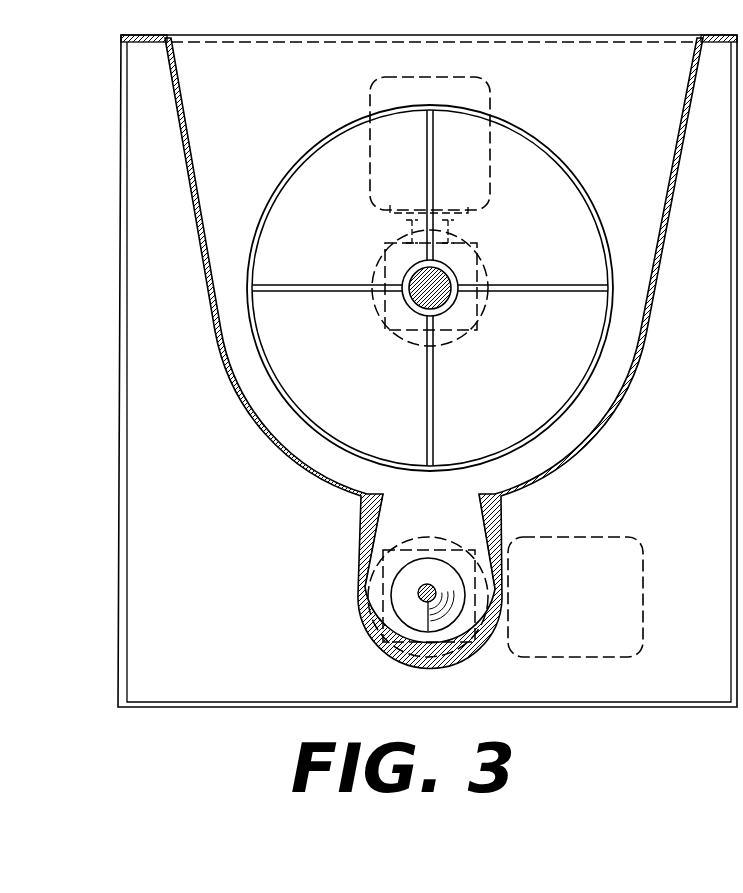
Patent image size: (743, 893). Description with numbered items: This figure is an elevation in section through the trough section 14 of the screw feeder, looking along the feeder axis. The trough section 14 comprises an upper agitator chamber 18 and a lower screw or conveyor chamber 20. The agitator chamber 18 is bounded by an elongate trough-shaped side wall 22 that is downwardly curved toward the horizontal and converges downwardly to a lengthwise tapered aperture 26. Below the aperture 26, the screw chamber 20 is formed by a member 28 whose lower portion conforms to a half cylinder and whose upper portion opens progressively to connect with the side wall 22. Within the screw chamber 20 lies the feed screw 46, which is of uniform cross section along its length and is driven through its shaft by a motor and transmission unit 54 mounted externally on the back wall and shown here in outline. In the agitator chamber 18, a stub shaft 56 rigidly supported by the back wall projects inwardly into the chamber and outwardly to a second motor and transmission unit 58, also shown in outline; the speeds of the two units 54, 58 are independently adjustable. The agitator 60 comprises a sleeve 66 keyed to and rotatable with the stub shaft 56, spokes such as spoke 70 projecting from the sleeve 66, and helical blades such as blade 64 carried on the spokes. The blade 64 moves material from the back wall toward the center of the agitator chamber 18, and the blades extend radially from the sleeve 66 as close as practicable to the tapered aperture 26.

The trough section 14 is at (106, 120).
The agitator chamber 18 is at (251, 90).
The screw or conveyor chamber 20 is at (444, 533).
The side wall 22 is at (192, 153).
The tapered aperture 26 is at (437, 490).
The member 28 is at (370, 528).
The feed screw 46 is at (402, 605).
The motor and transmission unit 54 is at (646, 537).
The stub shaft 56 is at (470, 273).
The motor and transmission unit 58 is at (490, 95).
The agitator 60 is at (590, 170).
The helical blade 64 is at (273, 211).
The sleeve 66 is at (403, 308).
The spoke 70 is at (432, 185).